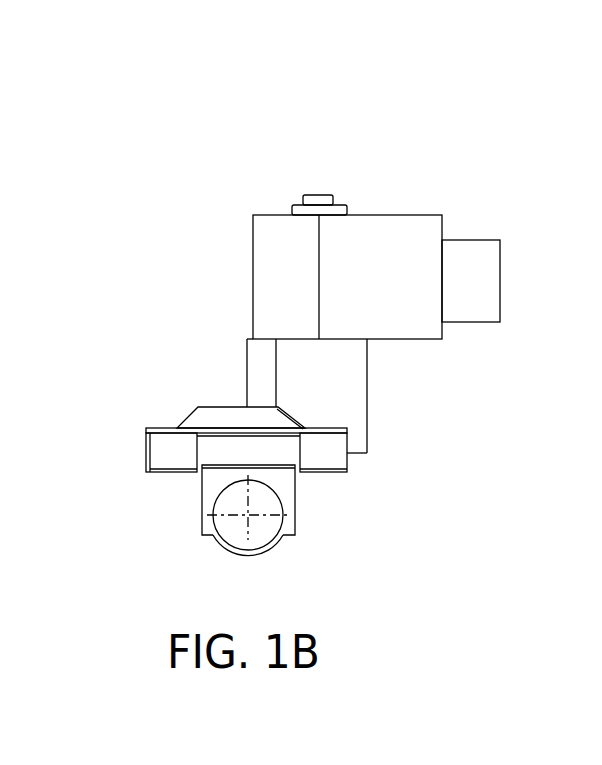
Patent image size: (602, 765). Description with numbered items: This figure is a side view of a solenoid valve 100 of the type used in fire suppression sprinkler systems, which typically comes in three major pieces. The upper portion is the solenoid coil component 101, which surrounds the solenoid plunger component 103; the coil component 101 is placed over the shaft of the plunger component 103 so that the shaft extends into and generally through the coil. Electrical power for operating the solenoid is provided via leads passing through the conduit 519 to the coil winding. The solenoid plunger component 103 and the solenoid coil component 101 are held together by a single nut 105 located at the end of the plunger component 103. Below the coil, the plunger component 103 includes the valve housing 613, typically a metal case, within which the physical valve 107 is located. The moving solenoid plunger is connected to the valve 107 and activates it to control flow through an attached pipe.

The solenoid valve 100 is at (264, 124).
The solenoid coil component 101 is at (443, 228).
The conduit 519 is at (500, 283).
The solenoid plunger component 103 is at (308, 195).
The nut 105 is at (342, 205).
The valve housing 613 is at (323, 475).
The valve 107 is at (250, 553).